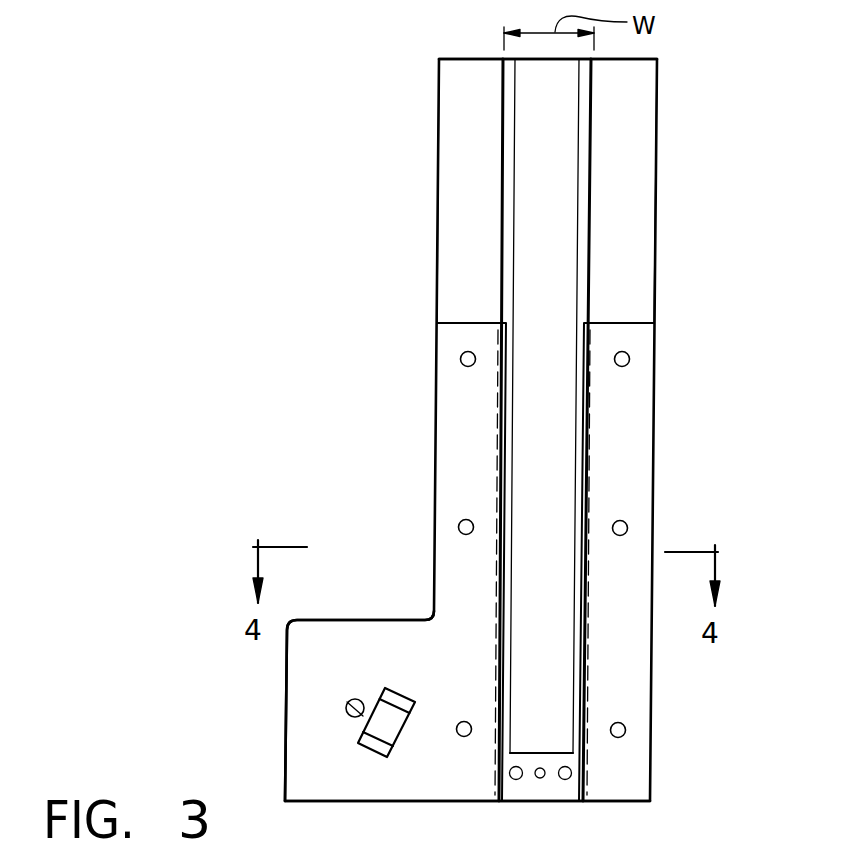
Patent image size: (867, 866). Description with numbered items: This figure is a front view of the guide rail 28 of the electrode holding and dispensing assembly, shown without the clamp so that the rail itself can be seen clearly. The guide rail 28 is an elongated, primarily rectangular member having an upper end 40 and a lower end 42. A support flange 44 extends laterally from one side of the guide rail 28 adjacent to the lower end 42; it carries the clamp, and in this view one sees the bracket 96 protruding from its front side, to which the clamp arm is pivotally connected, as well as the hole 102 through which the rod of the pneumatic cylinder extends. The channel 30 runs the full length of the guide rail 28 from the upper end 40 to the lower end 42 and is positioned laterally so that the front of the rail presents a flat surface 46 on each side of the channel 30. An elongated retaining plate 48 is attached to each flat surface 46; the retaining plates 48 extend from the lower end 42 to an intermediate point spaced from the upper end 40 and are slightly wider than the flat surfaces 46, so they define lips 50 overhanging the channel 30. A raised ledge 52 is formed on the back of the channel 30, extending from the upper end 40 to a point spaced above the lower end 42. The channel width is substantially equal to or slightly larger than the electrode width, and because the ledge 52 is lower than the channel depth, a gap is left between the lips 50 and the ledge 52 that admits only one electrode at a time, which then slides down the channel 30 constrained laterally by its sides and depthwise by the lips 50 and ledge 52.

The guide rail 28 is at (657, 190).
The channel 30 is at (505, 163).
The upper end 40 is at (635, 60).
The lower end 42 is at (621, 803).
The support flange 44 is at (362, 628).
The flat surface 46 is at (491, 284).
The retaining plate 48 is at (456, 462).
The lip 50 is at (506, 406).
The raised ledge 52 is at (565, 229).
The bracket 96 is at (368, 748).
The hole 102 is at (345, 708).